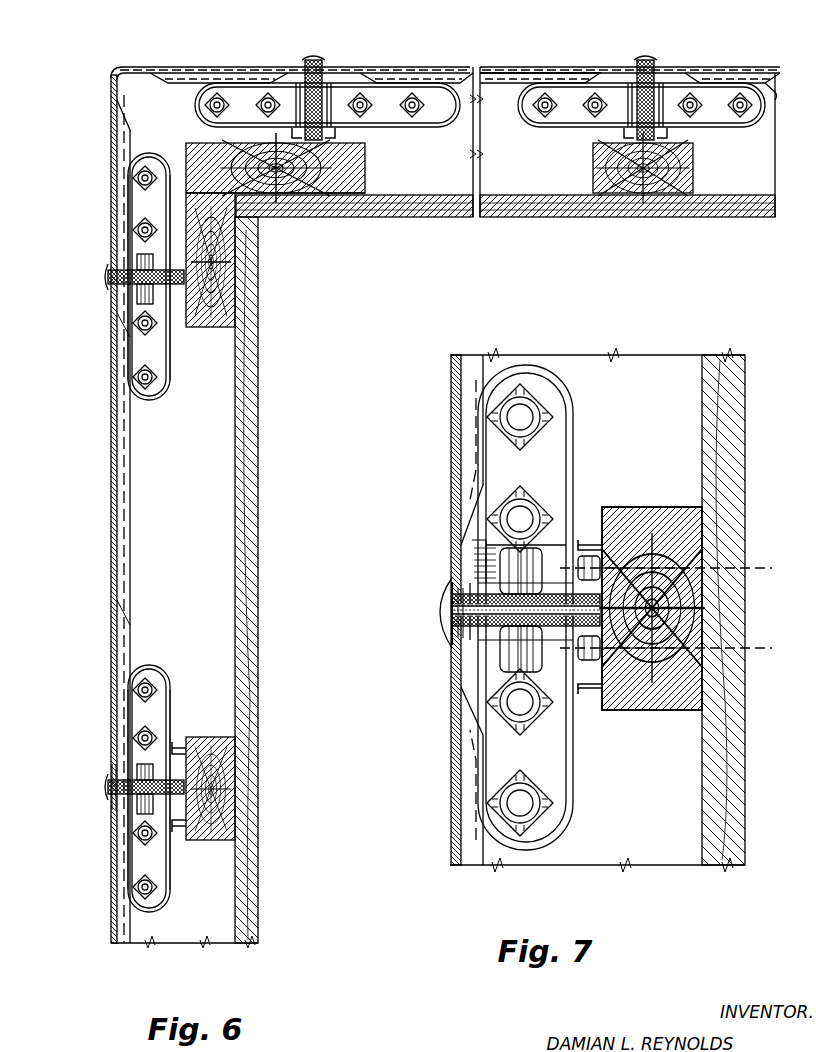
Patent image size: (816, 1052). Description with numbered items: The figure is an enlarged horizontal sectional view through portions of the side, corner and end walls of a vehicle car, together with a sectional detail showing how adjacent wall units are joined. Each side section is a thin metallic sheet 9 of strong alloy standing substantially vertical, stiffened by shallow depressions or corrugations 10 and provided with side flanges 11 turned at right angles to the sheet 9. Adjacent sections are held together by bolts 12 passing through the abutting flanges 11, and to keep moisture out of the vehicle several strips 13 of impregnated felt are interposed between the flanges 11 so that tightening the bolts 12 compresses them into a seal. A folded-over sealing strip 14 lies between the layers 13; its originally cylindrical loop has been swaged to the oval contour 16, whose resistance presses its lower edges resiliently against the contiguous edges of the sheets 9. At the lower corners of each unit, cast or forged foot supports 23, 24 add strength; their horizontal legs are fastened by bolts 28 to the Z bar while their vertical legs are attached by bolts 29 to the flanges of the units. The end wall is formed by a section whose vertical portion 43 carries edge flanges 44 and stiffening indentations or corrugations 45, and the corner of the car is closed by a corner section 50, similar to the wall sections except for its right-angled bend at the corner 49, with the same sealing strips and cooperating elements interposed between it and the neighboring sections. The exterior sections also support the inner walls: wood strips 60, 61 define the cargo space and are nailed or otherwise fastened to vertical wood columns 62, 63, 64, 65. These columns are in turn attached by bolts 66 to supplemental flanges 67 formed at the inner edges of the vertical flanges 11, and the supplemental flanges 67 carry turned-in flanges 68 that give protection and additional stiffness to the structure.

In FIG. 6, the thin metallic sheet 9 is at (112, 442).
In FIG. 7, the thin metallic sheet 9 is at (450, 422).
In FIG. 6, the depressions or corrugations 10 is at (130, 520).
In FIG. 7, the depressions or corrugations 10 is at (465, 366).
In FIG. 6, the side flanges 11 is at (137, 293).
In FIG. 7, the side flanges 11 is at (500, 575).
In FIG. 7, the bolts 12 is at (490, 560).
In FIG. 6, the strips of impregnated felt 13 is at (110, 778).
In FIG. 7, the strips of impregnated felt 13 is at (452, 600).
In FIG. 6, the sealing strip 14 is at (300, 65).
In FIG. 7, the sealing strip 14 is at (430, 602).
In FIG. 6, the flattened oval portion 16 is at (102, 275).
In FIG. 7, the flattened oval portion 16 is at (432, 612).
In FIG. 6, the foot support 23 is at (232, 90).
In FIG. 7, the foot support 23 is at (572, 773).
In FIG. 6, the foot support 24 is at (130, 150).
In FIG. 7, the foot support 24 is at (575, 430).
In FIG. 6, the bolts 28 is at (375, 112).
In FIG. 7, the bolts 28 is at (530, 395).
In FIG. 6, the bolts 29 is at (285, 108).
In FIG. 7, the bolts 29 is at (490, 555).
In FIG. 6, the vertical portion of end section 43 is at (460, 68).
In FIG. 6, the edge flanges 44 is at (338, 90).
In FIG. 6, the indentations or corrugations 45 is at (535, 68).
In FIG. 6, the corner 49 is at (118, 68).
In FIG. 6, the corner section 50 is at (178, 70).
In FIG. 6, the wood strip 60 is at (258, 480).
In FIG. 7, the wood strip 60 is at (745, 438).
In FIG. 6, the wood strip 61 is at (368, 215).
In FIG. 6, the vertical wood column 62 is at (225, 800).
In FIG. 7, the vertical wood column 62 is at (690, 520).
In FIG. 6, the vertical wood column 63 is at (225, 308).
In FIG. 6, the vertical wood column 64 is at (305, 200).
In FIG. 6, the vertical wood column 65 is at (665, 215).
In FIG. 7, the bolts 66 is at (674, 608).
In FIG. 6, the supplemental flanges 67 is at (190, 765).
In FIG. 7, the supplemental flanges 67 is at (590, 540).
In FIG. 6, the turned-in flanges 68 is at (190, 745).
In FIG. 7, the turned-in flanges 68 is at (580, 540).